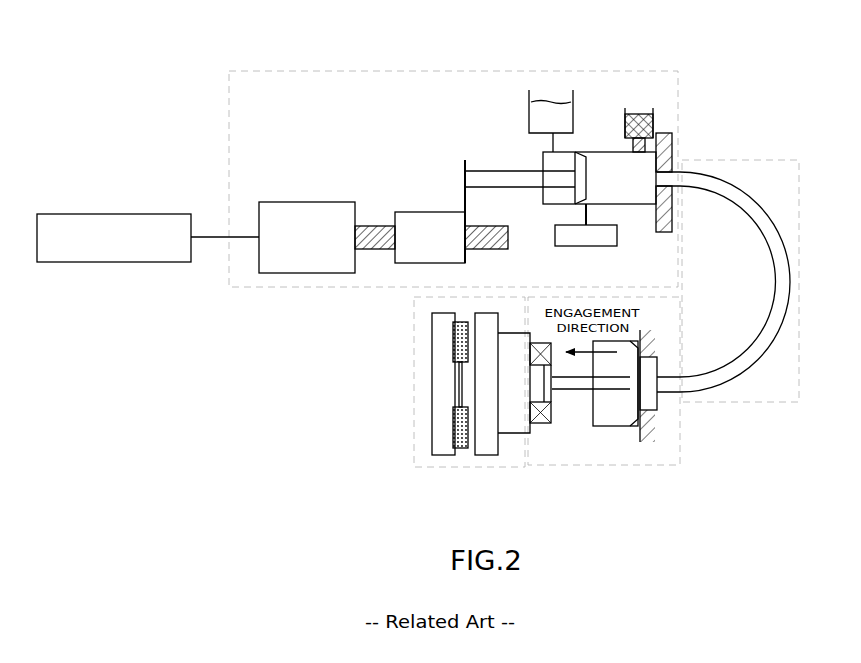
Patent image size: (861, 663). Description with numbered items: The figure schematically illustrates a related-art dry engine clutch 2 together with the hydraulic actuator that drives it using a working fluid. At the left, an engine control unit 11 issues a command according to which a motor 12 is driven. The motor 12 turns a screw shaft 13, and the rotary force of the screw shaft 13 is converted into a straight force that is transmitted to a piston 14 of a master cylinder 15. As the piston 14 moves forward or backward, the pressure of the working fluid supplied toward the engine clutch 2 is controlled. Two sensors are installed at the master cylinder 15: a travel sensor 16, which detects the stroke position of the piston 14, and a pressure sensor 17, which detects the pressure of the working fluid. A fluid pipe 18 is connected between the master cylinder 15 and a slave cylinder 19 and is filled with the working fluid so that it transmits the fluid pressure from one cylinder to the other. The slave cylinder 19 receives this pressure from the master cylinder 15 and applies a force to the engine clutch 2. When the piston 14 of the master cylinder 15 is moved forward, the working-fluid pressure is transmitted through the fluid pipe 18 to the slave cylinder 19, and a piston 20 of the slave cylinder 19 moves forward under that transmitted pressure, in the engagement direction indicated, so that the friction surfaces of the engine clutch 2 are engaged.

The engine clutch 2 is at (426, 437).
The engine control unit 11 is at (167, 214).
The motor 12 is at (318, 202).
The screw shaft 13 is at (375, 226).
The piston 14 is at (490, 171).
The master cylinder 15 is at (600, 128).
The travel sensor 16 is at (577, 246).
The pressure sensor 17 is at (653, 120).
The fluid pipe 18 is at (775, 226).
The slave cylinder 19 is at (625, 432).
The piston 20 is at (570, 389).